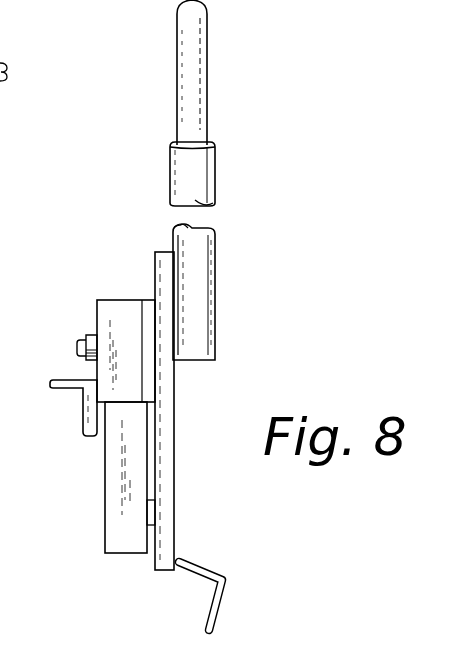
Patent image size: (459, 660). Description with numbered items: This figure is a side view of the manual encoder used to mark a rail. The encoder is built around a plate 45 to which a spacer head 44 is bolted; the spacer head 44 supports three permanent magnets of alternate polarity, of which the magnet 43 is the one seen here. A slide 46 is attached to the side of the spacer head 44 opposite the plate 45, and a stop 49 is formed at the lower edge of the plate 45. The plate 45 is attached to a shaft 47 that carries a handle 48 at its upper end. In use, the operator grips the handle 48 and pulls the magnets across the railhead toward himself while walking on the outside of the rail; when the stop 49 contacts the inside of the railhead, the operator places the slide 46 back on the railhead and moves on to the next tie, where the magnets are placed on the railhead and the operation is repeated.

The permanent magnet 43 is at (112, 513).
The spacer head 44 is at (97, 312).
The plate 45 is at (166, 518).
The slide 46 is at (65, 380).
The shaft 47 is at (216, 168).
The handle 48 is at (202, 62).
The stop 49 is at (226, 598).